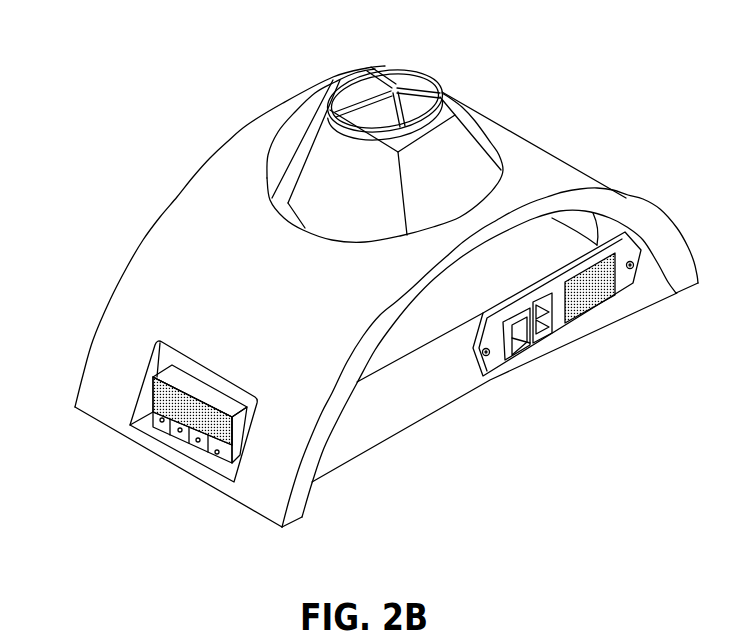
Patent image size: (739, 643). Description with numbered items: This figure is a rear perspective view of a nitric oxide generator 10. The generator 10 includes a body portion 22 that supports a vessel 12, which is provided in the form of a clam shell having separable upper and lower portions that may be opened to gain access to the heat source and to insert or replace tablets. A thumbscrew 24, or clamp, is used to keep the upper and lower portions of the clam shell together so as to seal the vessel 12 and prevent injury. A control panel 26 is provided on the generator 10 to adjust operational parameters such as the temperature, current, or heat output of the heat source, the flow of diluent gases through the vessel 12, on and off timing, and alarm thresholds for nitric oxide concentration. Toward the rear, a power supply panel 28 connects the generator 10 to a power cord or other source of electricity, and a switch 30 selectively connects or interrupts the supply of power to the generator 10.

The nitric oxide generator 10 is at (120, 78).
The vessel 12 is at (463, 150).
The body portion 22 is at (543, 173).
The thumbscrew 24 is at (430, 88).
The control panel 26 is at (207, 428).
The power supply panel 28 is at (558, 317).
The switch 30 is at (525, 345).